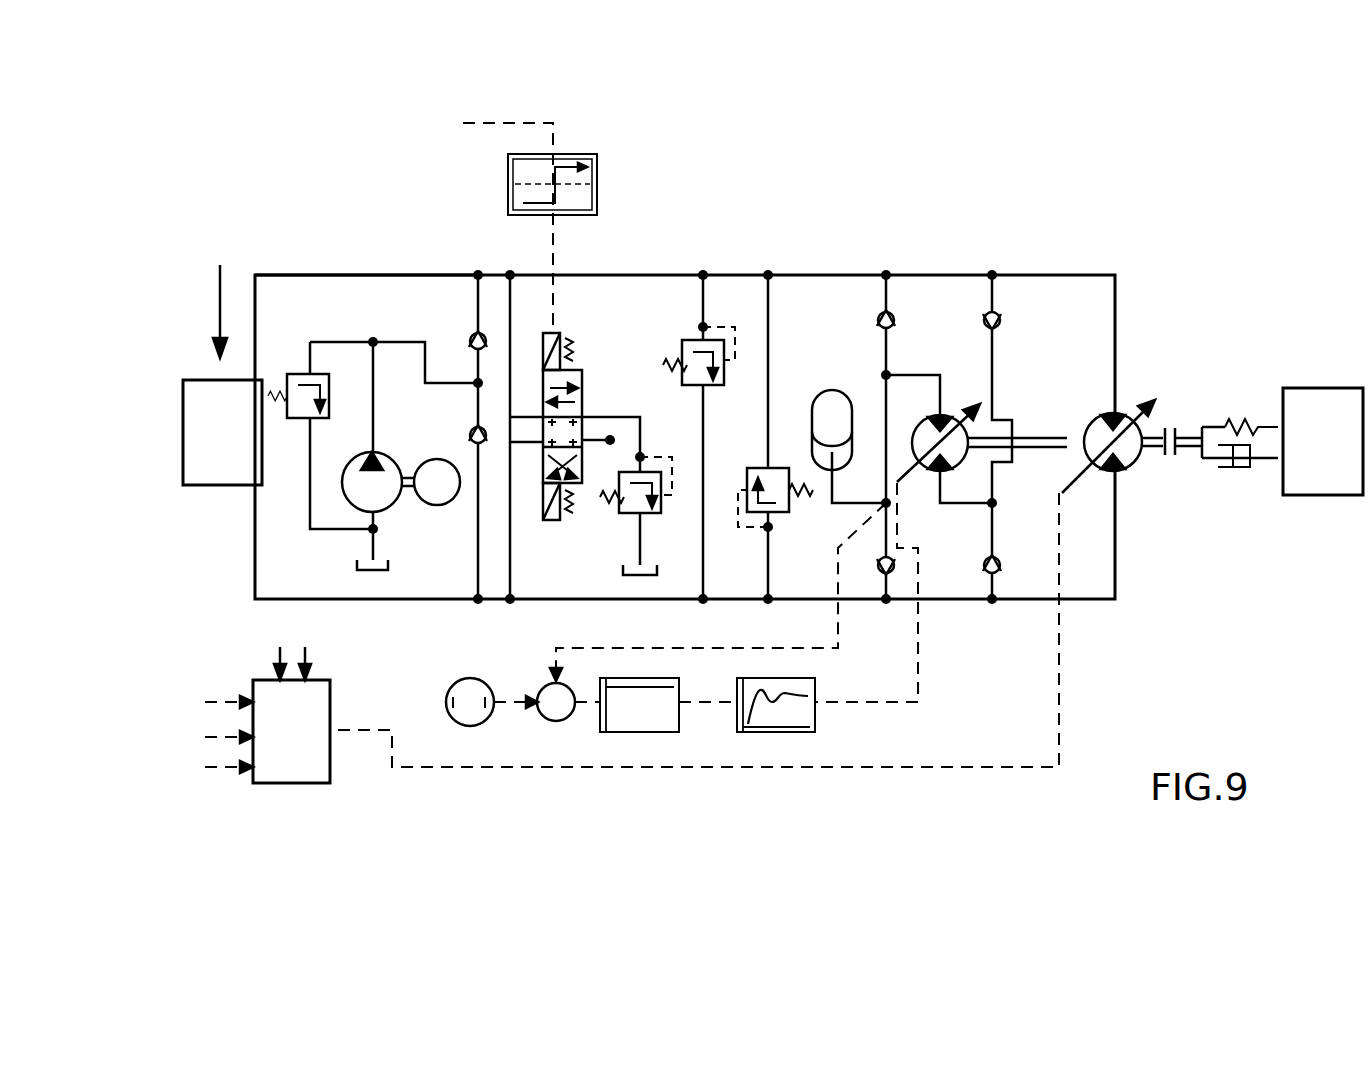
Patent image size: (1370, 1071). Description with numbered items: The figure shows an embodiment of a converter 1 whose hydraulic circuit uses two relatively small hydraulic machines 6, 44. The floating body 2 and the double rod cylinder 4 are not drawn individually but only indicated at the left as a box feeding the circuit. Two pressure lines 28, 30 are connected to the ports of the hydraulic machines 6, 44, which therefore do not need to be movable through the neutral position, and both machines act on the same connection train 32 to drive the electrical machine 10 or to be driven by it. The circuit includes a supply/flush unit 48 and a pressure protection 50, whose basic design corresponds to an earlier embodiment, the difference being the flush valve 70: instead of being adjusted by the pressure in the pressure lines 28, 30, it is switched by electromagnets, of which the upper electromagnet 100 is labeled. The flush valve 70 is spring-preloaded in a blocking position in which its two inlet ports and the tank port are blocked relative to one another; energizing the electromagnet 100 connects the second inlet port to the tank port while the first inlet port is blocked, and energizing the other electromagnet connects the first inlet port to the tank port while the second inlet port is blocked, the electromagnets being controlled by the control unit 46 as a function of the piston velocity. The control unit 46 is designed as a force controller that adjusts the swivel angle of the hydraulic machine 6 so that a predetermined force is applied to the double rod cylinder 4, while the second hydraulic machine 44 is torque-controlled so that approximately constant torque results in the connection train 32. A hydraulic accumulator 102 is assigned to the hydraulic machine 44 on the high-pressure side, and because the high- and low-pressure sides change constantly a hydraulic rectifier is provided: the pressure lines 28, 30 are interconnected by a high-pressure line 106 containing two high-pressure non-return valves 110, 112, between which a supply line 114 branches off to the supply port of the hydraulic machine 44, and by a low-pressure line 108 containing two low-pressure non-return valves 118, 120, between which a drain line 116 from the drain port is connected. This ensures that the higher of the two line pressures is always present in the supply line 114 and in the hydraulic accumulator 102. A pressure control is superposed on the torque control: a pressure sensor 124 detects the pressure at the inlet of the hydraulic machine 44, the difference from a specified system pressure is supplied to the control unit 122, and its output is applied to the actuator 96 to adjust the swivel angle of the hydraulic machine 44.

The converter 1 is at (1102, 232).
The floating body 2 is at (228, 422).
The double rod cylinder 4 is at (200, 457).
The hydraulic machine 6 is at (1133, 450).
The electrical machine 10 is at (1308, 475).
The pressure line 28 is at (255, 570).
The pressure line 30 is at (305, 273).
The connection train 32 is at (1047, 438).
The hydraulic machine 44 is at (923, 432).
The control unit 46 is at (308, 750).
The supply/flush unit 48 is at (450, 300).
The pressure protection 50 is at (739, 293).
The flush valve 70 is at (583, 387).
The swivel angle actuator 96 is at (767, 732).
The electromagnet 100 is at (553, 340).
The hydraulic accumulator 102 is at (838, 422).
The high-pressure line 106 is at (878, 300).
The low-pressure line 108 is at (996, 305).
The high-pressure non-return valve 110 is at (893, 312).
The high-pressure non-return valve 112 is at (884, 576).
The supply line 114 is at (940, 393).
The drain line 116 is at (958, 507).
The low-pressure non-return valve 118 is at (1001, 317).
The low-pressure non-return valve 120 is at (1001, 567).
The control unit 122 is at (662, 724).
The pressure sensor 124 is at (883, 502).